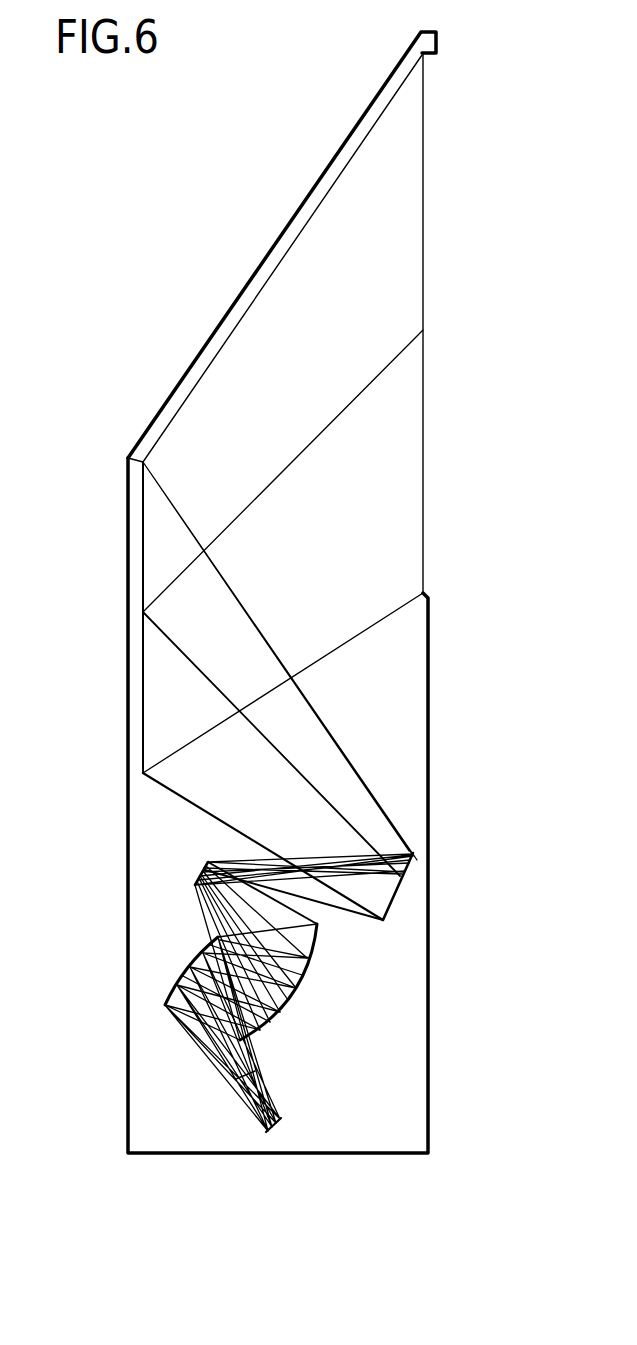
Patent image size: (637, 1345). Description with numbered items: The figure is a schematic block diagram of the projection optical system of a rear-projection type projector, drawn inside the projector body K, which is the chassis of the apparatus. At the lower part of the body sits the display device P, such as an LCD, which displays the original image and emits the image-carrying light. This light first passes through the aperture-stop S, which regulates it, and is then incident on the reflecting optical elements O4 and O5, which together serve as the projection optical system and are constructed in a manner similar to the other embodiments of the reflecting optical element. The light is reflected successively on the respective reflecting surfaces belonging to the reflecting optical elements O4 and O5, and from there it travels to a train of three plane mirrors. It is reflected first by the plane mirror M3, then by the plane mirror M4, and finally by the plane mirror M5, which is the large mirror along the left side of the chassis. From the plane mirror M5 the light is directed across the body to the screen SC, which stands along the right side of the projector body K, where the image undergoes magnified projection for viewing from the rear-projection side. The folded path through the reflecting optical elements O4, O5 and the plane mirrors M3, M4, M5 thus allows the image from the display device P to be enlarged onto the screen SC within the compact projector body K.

The projector body K is at (312, 193).
The screen SC is at (423, 210).
The plane mirror M5 is at (143, 718).
The plane mirror M4 is at (391, 901).
The plane mirror M3 is at (195, 878).
The reflecting optical element O5 is at (297, 983).
The reflecting optical element O4 is at (165, 1002).
The aperture-stop S is at (240, 1085).
The display device P is at (278, 1121).